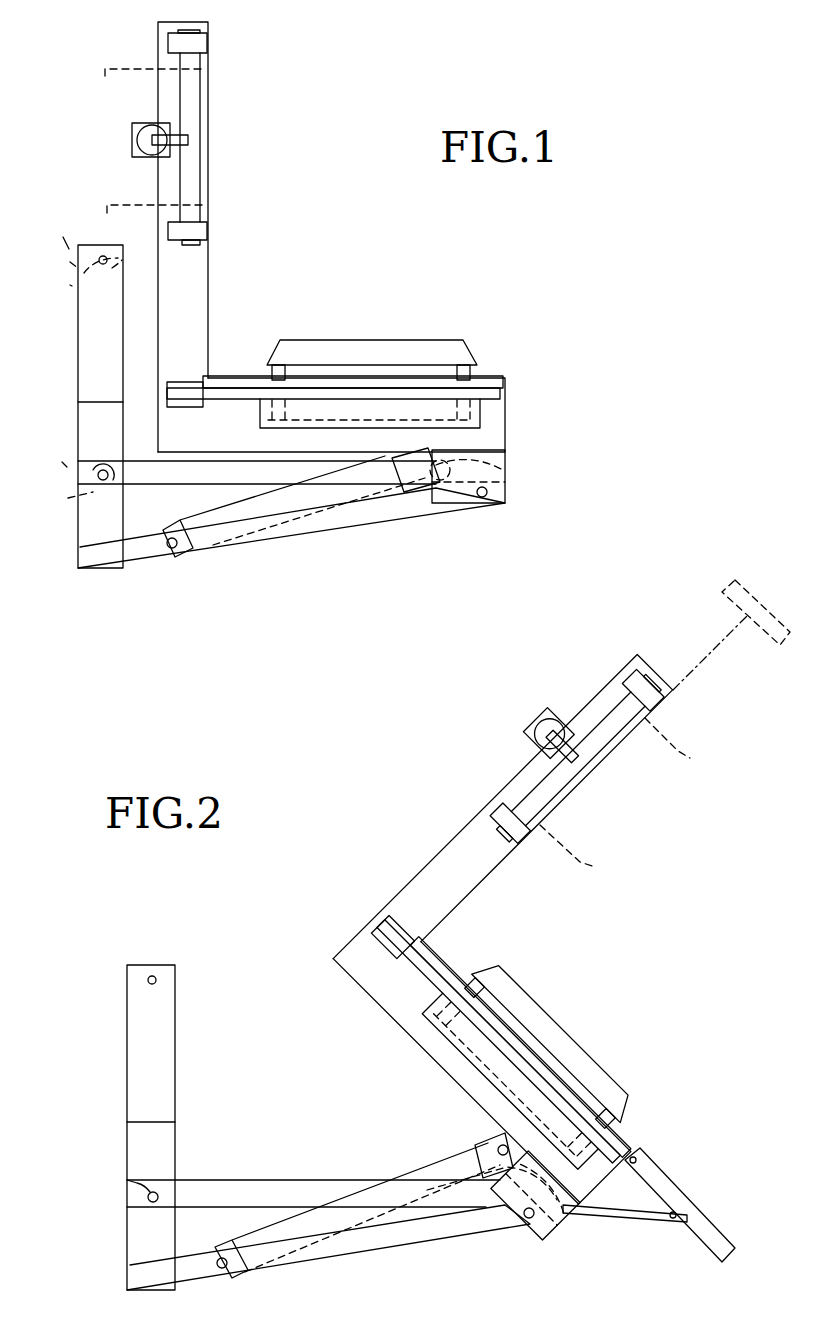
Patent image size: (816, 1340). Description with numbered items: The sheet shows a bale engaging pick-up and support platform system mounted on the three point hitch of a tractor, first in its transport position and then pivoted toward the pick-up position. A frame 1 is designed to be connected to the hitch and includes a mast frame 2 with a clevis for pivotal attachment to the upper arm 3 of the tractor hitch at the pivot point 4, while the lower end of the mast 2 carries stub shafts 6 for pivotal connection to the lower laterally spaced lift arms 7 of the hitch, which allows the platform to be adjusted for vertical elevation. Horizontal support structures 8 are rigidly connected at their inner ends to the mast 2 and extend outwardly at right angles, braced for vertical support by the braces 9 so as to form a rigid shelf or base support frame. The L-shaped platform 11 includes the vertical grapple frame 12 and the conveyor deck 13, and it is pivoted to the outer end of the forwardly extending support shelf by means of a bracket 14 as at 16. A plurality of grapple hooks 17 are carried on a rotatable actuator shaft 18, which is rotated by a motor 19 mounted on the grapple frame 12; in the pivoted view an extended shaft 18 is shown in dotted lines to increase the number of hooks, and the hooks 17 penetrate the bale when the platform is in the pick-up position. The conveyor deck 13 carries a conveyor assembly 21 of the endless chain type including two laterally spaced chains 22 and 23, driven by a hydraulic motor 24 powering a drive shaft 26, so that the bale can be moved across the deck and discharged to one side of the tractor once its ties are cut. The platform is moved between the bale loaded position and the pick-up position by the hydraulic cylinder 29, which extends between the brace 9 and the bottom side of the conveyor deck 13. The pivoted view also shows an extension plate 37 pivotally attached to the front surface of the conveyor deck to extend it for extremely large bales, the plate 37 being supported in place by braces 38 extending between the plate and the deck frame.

In FIG. 1, the frame 1 is at (297, 552).
In FIG. 2, the frame 1 is at (250, 1132).
In FIG. 1, the mast frame 2 is at (93, 352).
In FIG. 2, the mast frame 2 is at (177, 1053).
In FIG. 1, the upper arm 3 is at (58, 229).
In FIG. 1, the pivot point 4 is at (103, 268).
In FIG. 2, the pivot point 4 is at (172, 976).
In FIG. 1, the stub shafts 6 is at (100, 486).
In FIG. 2, the stub shafts 6 is at (140, 1178).
In FIG. 1, the lift arms 7 is at (76, 465).
In FIG. 1, the horizontal support structures 8 is at (192, 470).
In FIG. 2, the horizontal support structures 8 is at (290, 1190).
In FIG. 1, the braces 9 is at (383, 510).
In FIG. 2, the braces 9 is at (362, 1240).
In FIG. 1, the platform 11 is at (250, 303).
In FIG. 2, the platform 11 is at (497, 936).
In FIG. 1, the grapple frame 12 is at (197, 285).
In FIG. 2, the grapple frame 12 is at (485, 878).
In FIG. 1, the conveyor deck 13 is at (235, 410).
In FIG. 2, the conveyor deck 13 is at (380, 985).
In FIG. 1, the bracket 14 is at (508, 462).
In FIG. 2, the bracket 14 is at (560, 1218).
In FIG. 1, the pivot 16 is at (484, 500).
In FIG. 2, the pivot 16 is at (525, 1225).
In FIG. 1, the grapple hooks 17 is at (128, 203).
In FIG. 2, the grapple hooks 17 is at (618, 882).
In FIG. 1, the actuator shaft 18 is at (197, 165).
In FIG. 2, the actuator shaft 18 is at (540, 780).
In FIG. 1, the motor 19 is at (134, 128).
In FIG. 2, the motor 19 is at (547, 725).
In FIG. 1, the conveyor assembly 21 is at (392, 325).
In FIG. 2, the conveyor assembly 21 is at (615, 1032).
In FIG. 1, the chain 22 is at (490, 370).
In FIG. 2, the chain 22 is at (520, 1047).
In FIG. 1, the chain 23 is at (287, 375).
In FIG. 2, the chain 23 is at (540, 1053).
In FIG. 1, the hydraulic motor 24 is at (180, 387).
In FIG. 2, the hydraulic motor 24 is at (405, 910).
In FIG. 1, the drive shaft 26 is at (400, 392).
In FIG. 2, the drive shaft 26 is at (497, 1045).
In FIG. 1, the hydraulic cylinder 29 is at (215, 518).
In FIG. 2, the hydraulic cylinder 29 is at (345, 1215).
In FIG. 2, the extension plate 37 is at (680, 1200).
In FIG. 2, the braces 38 is at (650, 1215).